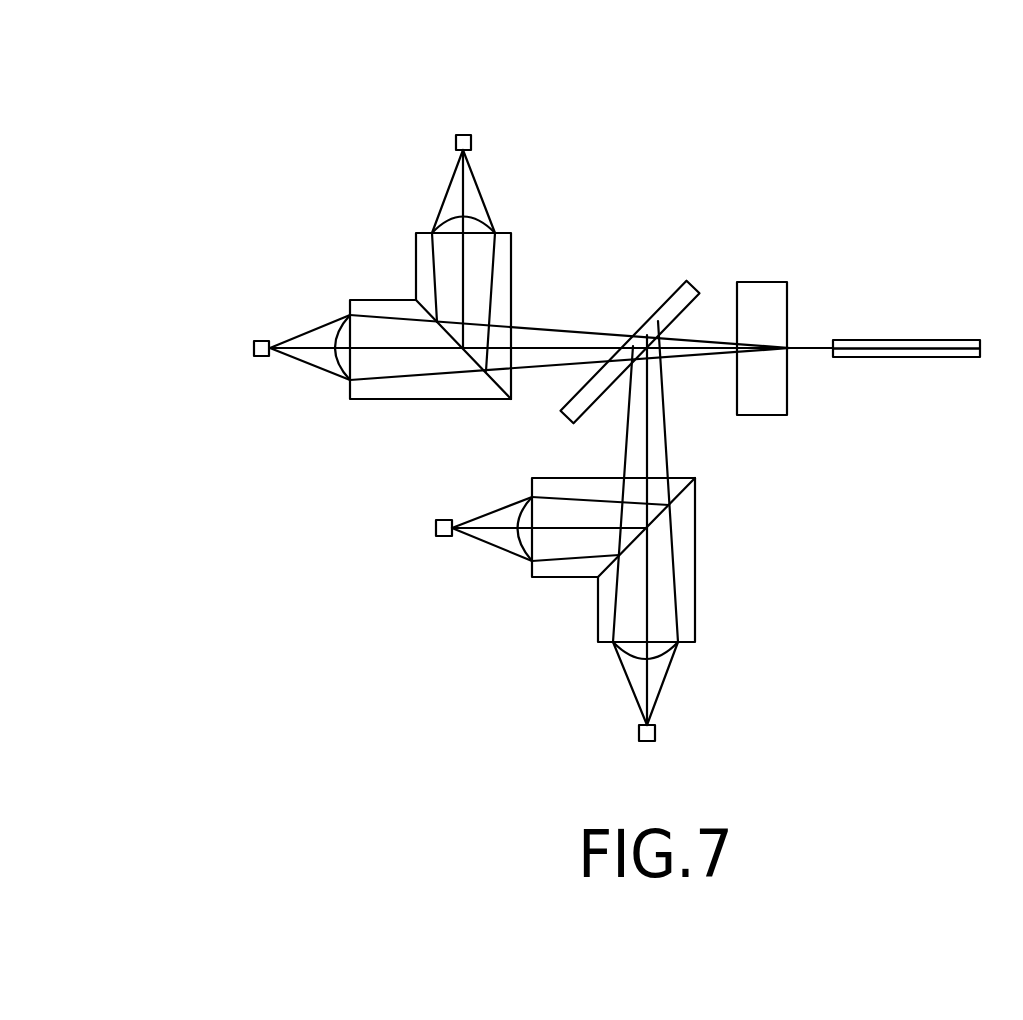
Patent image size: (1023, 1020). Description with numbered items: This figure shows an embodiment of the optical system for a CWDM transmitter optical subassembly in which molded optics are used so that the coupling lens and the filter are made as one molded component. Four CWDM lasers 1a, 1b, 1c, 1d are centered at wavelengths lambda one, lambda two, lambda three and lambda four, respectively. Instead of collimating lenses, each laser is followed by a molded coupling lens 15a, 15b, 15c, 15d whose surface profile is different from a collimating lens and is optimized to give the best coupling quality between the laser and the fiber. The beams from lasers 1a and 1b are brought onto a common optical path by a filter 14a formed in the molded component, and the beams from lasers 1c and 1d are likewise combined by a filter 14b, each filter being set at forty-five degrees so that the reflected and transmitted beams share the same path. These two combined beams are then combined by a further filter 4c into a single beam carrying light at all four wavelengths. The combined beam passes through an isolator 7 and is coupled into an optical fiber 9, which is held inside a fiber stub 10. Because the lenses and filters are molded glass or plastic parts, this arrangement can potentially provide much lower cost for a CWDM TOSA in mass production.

The CWDM laser 1a is at (462, 135).
The CWDM laser 1b is at (252, 348).
The CWDM laser 1c is at (435, 535).
The CWDM laser 1d is at (638, 738).
The molded coupling lens 15a is at (416, 233).
The molded coupling lens 15b is at (350, 300).
The molded coupling lens 15c is at (531, 576).
The molded coupling lens 15d is at (598, 633).
The filter 14a is at (475, 355).
The filter 14b is at (627, 548).
The filter 4c is at (675, 300).
The isolator 7 is at (770, 282).
The optical fiber 9 is at (857, 341).
The fiber stub 10 is at (945, 341).